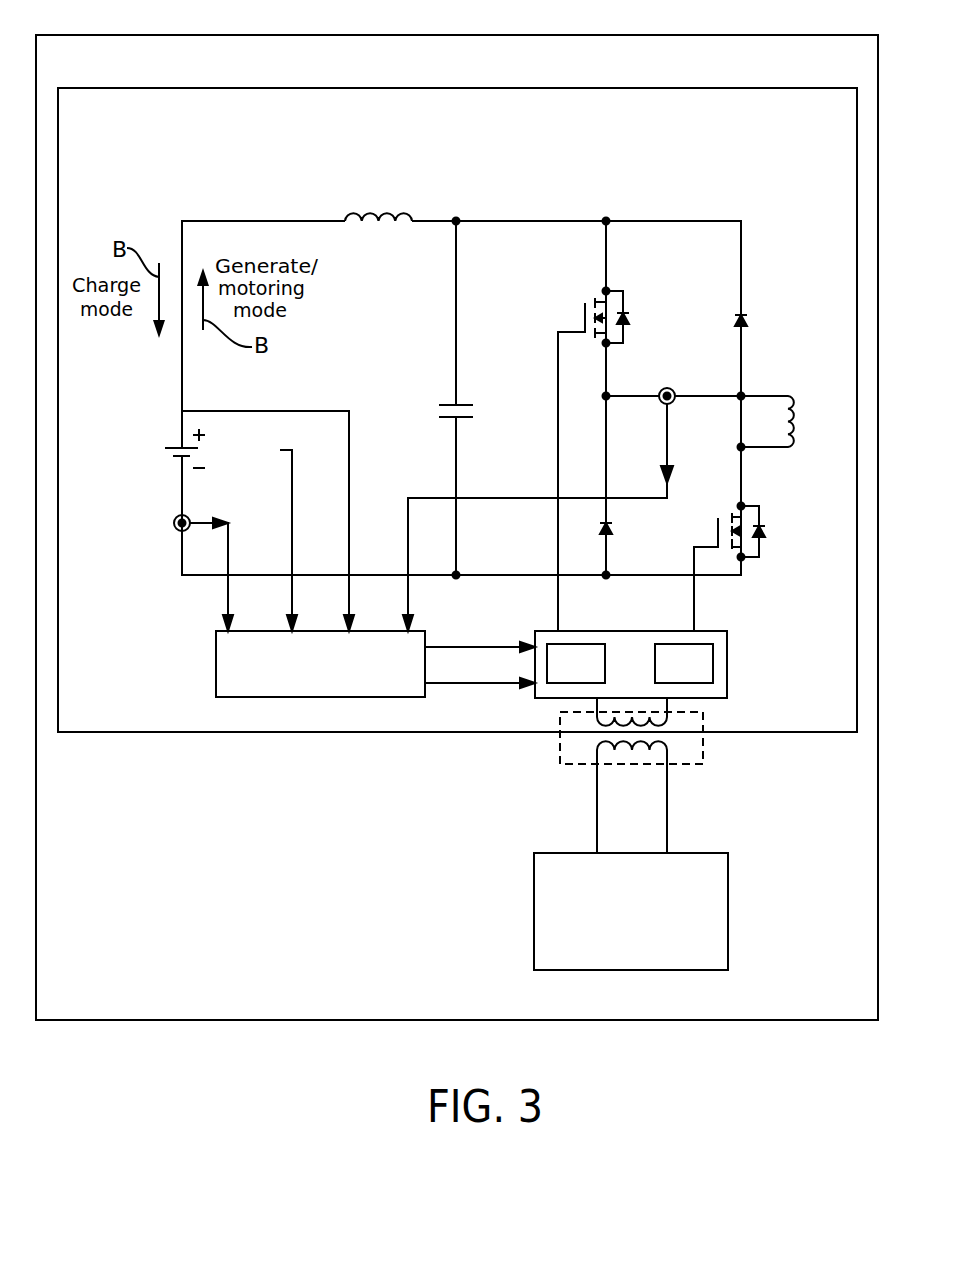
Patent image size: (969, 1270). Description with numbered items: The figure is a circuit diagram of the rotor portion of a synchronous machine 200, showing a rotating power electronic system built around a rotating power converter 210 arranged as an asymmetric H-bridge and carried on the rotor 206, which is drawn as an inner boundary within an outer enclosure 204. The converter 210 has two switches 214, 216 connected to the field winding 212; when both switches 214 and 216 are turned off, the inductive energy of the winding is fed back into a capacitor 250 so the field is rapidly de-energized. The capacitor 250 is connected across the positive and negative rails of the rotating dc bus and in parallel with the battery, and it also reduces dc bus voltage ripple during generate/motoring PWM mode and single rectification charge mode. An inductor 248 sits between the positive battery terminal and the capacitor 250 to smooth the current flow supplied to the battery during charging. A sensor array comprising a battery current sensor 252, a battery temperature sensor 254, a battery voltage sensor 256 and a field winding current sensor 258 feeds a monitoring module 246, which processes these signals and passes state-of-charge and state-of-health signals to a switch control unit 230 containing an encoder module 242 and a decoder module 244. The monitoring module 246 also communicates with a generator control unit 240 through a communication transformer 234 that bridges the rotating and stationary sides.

The synchronous machine 200 is at (168, 1056).
The enclosure 204 is at (862, 75).
The rotor 206 is at (822, 126).
The rotating power converter 210 is at (548, 207).
The field winding 212 is at (802, 403).
The switch 214 is at (644, 318).
The switch 216 is at (774, 548).
The switch control unit 230 is at (727, 688).
The communication transformer 234 is at (560, 735).
The generator control unit 240 is at (728, 892).
The encoder module 242 is at (596, 678).
The decoder module 244 is at (704, 678).
The monitoring module 246 is at (216, 678).
The inductor 248 is at (388, 197).
The capacitor 250 is at (441, 394).
The battery current sensor 252 is at (191, 533).
The battery temperature sensor 254 is at (217, 464).
The battery voltage sensor 256 is at (332, 421).
The field winding current sensor 258 is at (678, 409).